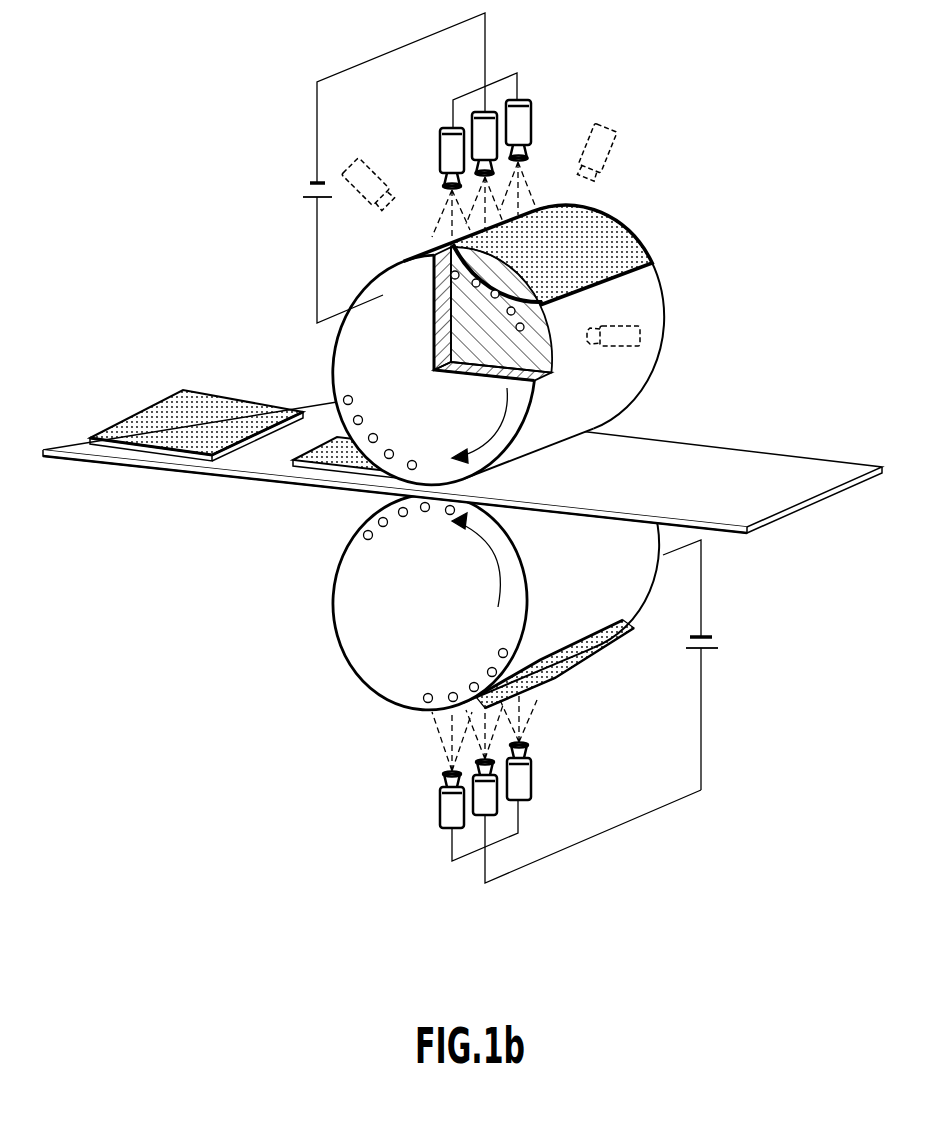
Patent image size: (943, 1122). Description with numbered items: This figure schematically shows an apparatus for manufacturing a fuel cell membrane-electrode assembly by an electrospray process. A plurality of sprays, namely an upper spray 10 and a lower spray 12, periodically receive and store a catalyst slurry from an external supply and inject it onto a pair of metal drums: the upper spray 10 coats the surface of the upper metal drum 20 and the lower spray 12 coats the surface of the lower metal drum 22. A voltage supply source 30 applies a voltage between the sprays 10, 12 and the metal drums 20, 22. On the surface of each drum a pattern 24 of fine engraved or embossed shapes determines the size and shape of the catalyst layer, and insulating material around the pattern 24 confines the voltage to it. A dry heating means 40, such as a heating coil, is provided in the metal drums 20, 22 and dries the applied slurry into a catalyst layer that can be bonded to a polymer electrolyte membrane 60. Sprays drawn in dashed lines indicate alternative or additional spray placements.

The upper spray 10 is at (533, 124).
The lower spray 12 is at (440, 808).
The upper metal drum 20 is at (622, 300).
The lower metal drum 22 is at (330, 622).
The pattern 24 is at (540, 353).
The voltage supply source 30 is at (310, 183).
The dry heating means 40 is at (373, 437).
The polymer electrolyte membrane 60 is at (733, 465).